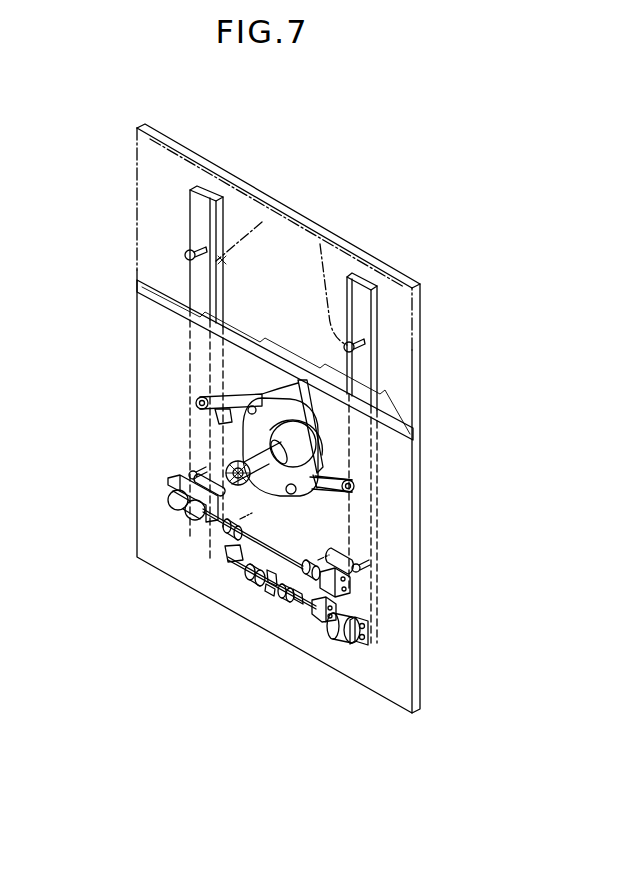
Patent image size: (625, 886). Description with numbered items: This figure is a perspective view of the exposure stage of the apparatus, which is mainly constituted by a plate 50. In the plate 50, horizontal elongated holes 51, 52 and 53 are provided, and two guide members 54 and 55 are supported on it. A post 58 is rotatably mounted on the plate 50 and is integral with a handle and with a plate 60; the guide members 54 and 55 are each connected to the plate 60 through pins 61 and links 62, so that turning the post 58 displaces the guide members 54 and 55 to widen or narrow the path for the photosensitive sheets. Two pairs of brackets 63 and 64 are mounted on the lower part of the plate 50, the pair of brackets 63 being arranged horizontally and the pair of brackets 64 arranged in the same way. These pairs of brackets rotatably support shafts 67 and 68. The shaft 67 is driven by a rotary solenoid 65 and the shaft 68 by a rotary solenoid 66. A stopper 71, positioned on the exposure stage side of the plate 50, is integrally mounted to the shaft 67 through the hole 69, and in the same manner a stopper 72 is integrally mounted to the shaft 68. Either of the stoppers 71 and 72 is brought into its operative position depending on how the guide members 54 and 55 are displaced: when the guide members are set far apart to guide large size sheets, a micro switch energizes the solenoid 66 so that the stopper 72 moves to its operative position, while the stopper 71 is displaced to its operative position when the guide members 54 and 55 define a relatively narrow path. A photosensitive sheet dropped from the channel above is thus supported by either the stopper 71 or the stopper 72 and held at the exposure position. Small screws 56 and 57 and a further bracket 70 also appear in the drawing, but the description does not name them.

The plate 50 is at (150, 361).
The horizontal elongated hole 51 is at (320, 244).
The horizontal elongated hole 52 is at (225, 409).
The horizontal elongated hole 53 is at (235, 477).
The guide member 54 is at (203, 208).
The guide member 55 is at (363, 302).
The screw 56 is at (188, 251).
The set screw 57 is at (189, 474).
The post 58 is at (226, 468).
The plate 60 is at (380, 411).
The pin 61 is at (197, 404).
The link 62 is at (208, 393).
The bracket 63 is at (190, 520).
The bracket 64 is at (232, 572).
The rotary solenoid 65 is at (170, 497).
The rotary solenoid 66 is at (338, 640).
The shaft 67 is at (250, 582).
The shaft 68 is at (268, 584).
The hole 69 is at (237, 546).
The motor bracket 70 is at (370, 636).
The stopper 71 is at (227, 518).
The stopper 72 is at (272, 594).